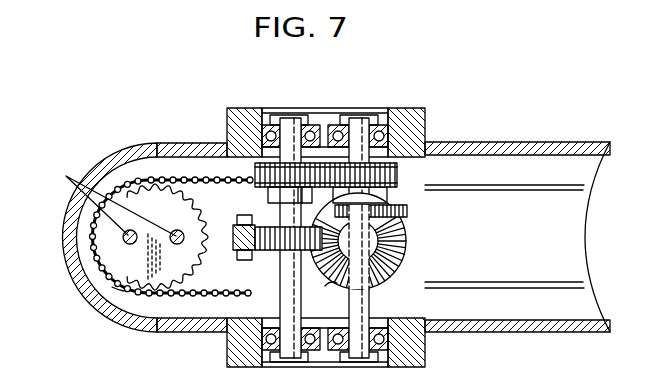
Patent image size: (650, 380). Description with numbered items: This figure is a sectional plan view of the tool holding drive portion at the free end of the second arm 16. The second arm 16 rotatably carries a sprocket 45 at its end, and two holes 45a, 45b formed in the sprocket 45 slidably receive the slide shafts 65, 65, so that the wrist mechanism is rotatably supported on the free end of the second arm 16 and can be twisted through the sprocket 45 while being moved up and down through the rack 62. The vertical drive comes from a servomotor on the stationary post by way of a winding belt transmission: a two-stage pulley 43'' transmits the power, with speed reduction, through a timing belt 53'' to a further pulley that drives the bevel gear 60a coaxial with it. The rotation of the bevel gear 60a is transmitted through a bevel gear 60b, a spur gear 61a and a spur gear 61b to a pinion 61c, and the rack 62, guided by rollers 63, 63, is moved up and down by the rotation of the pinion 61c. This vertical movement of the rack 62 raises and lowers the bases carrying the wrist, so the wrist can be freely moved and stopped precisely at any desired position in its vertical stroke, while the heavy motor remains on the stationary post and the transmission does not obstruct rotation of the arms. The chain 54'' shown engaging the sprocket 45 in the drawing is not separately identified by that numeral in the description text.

The tubular housing 16 is at (515, 142).
The inner tube 53'' is at (504, 254).
The drive shaft 43'' is at (326, 302).
The bevel pinion 60a is at (412, 232).
The bevel gear 60b is at (405, 210).
The right vertical shaft 61a is at (361, 162).
The left vertical shaft 61b is at (291, 162).
The lower spur gear 61c is at (264, 252).
The sprocket wheel 62 is at (179, 237).
The spur gears 63 is at (302, 228).
The support arms 65 is at (107, 197).
The pivot pin 45 is at (175, 240).
The chain guide 45a is at (112, 287).
The pivot pin 45b is at (123, 237).
The drive chain 54'' is at (172, 272).